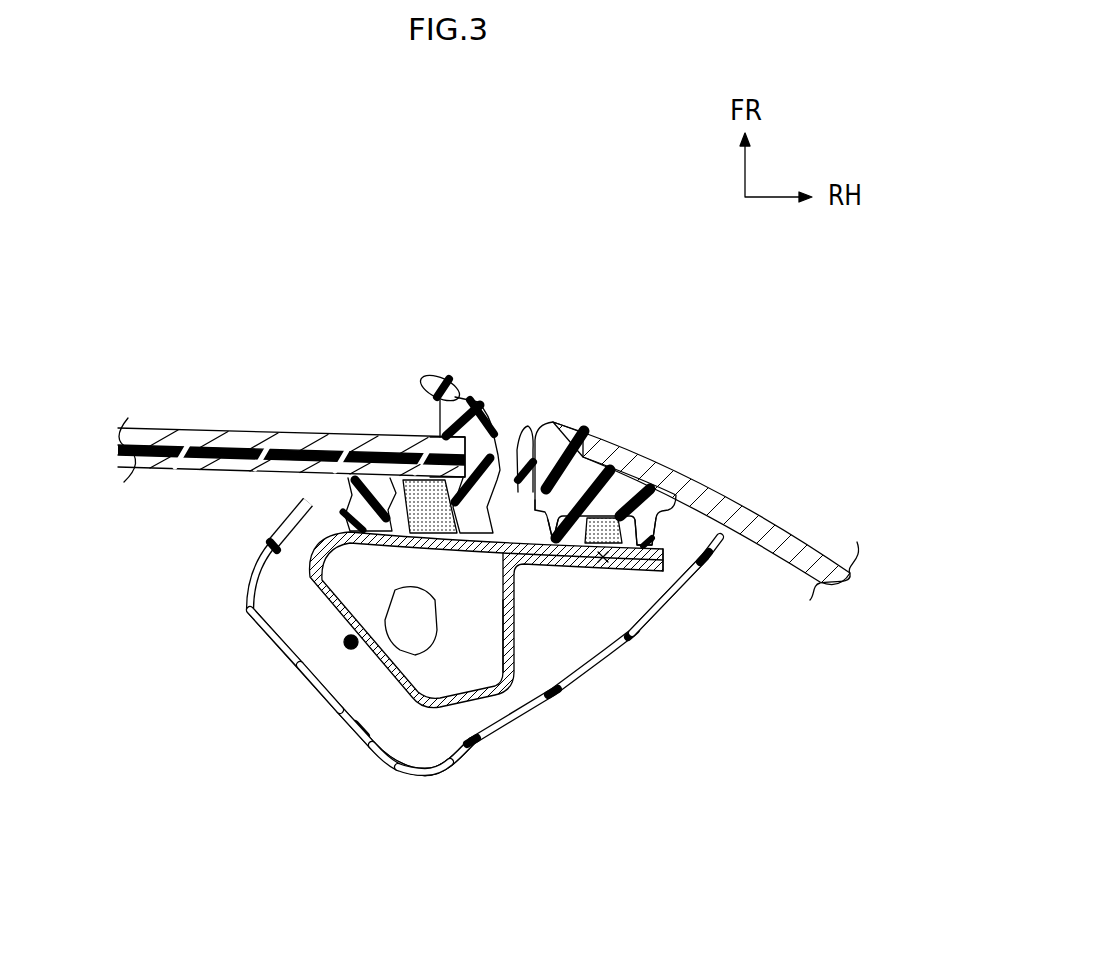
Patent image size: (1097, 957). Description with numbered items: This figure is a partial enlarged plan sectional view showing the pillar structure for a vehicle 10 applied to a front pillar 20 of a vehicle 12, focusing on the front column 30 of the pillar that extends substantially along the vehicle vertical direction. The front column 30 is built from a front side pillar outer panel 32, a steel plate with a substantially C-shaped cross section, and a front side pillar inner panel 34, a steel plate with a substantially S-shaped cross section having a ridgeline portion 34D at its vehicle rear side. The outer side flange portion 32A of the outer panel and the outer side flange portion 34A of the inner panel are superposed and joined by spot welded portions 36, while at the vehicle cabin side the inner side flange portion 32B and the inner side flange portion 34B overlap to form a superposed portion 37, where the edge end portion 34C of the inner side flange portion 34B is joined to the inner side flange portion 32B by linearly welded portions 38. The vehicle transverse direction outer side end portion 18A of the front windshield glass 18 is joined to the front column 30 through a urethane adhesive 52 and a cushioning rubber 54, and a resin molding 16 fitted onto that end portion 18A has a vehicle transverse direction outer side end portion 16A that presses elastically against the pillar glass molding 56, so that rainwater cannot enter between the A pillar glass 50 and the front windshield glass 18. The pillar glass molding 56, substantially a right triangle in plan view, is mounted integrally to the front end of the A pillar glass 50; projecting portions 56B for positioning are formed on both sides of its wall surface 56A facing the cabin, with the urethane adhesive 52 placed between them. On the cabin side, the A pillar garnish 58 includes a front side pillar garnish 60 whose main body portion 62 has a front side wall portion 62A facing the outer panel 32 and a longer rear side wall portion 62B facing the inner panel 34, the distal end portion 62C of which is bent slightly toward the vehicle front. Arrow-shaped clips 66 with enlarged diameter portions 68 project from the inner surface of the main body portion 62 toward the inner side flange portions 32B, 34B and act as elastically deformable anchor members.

The pillar structure for a vehicle 10 is at (306, 620).
The vehicle 12 is at (330, 268).
The molding 16 is at (447, 378).
The vehicle transverse direction outer side end portion 16A is at (527, 437).
The front windshield glass 18 is at (201, 420).
The vehicle transverse direction outer side end portion 18A is at (428, 432).
The front pillar 20 is at (481, 644).
The front column 30 is at (490, 707).
The front side pillar outer panel 32 is at (300, 594).
The outer side flange portion 32A is at (668, 552).
The inner side flange portion 32B is at (447, 687).
The front side pillar inner panel 34 is at (575, 682).
The outer side flange portion 34A is at (690, 572).
The inner side flange portion 34B is at (375, 740).
The edge end portion 34C is at (362, 652).
The ridgeline portion 34D is at (447, 765).
The spot welded portion 36 is at (606, 562).
The superposed portion 37 is at (390, 704).
The linearly welded portion 38 is at (343, 648).
The A pillar glass 50 is at (806, 540).
The urethane adhesive 52 is at (412, 482).
The cushioning rubber 54 is at (367, 484).
The pillar glass molding 56 is at (570, 421).
The wall surface 56A is at (647, 575).
The projecting portion 56B is at (667, 540).
The A pillar garnish 58 is at (424, 767).
The front side pillar garnish 60 is at (425, 787).
The main body portion 62 is at (350, 728).
The side wall portion 62A is at (270, 540).
The side wall portion 62B is at (552, 699).
The distal end portion 62C is at (712, 560).
The clip 66 is at (438, 594).
The enlarged diameter portion 68 is at (358, 635).